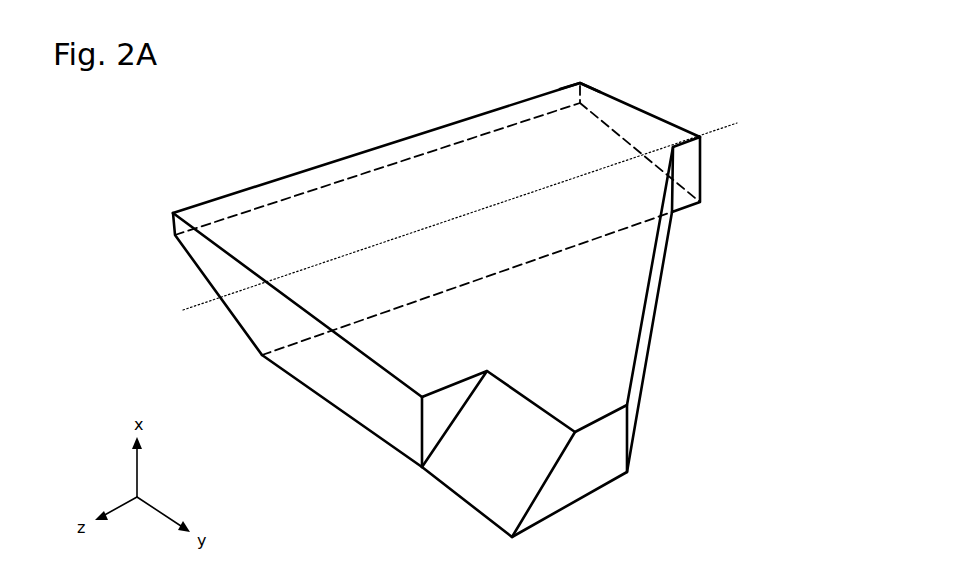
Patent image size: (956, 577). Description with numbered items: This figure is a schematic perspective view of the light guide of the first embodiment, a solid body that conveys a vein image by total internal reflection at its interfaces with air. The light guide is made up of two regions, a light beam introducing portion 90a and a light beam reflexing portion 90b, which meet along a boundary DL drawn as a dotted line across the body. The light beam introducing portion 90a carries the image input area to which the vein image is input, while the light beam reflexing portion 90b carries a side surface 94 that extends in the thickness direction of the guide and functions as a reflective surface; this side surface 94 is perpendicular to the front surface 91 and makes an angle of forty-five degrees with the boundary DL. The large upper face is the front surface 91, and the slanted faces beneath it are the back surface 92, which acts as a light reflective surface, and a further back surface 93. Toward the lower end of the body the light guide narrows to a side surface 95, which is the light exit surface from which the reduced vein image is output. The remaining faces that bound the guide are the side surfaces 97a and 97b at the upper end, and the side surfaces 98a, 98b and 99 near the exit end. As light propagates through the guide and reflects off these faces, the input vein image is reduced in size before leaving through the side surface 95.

The light beam introducing portion 90a is at (492, 255).
The light beam reflexing portion 90b is at (578, 347).
The front surface 91 is at (632, 118).
The back surface 92 is at (229, 313).
The back surface 93 is at (328, 400).
The side surface 94 is at (648, 310).
The side surface 95 is at (473, 499).
The side surface 97a is at (612, 93).
The side surface 97b is at (696, 162).
The side surface 98a is at (582, 479).
The side surface 98b is at (427, 436).
The side surface 99 is at (402, 418).
The boundary DL is at (475, 211).